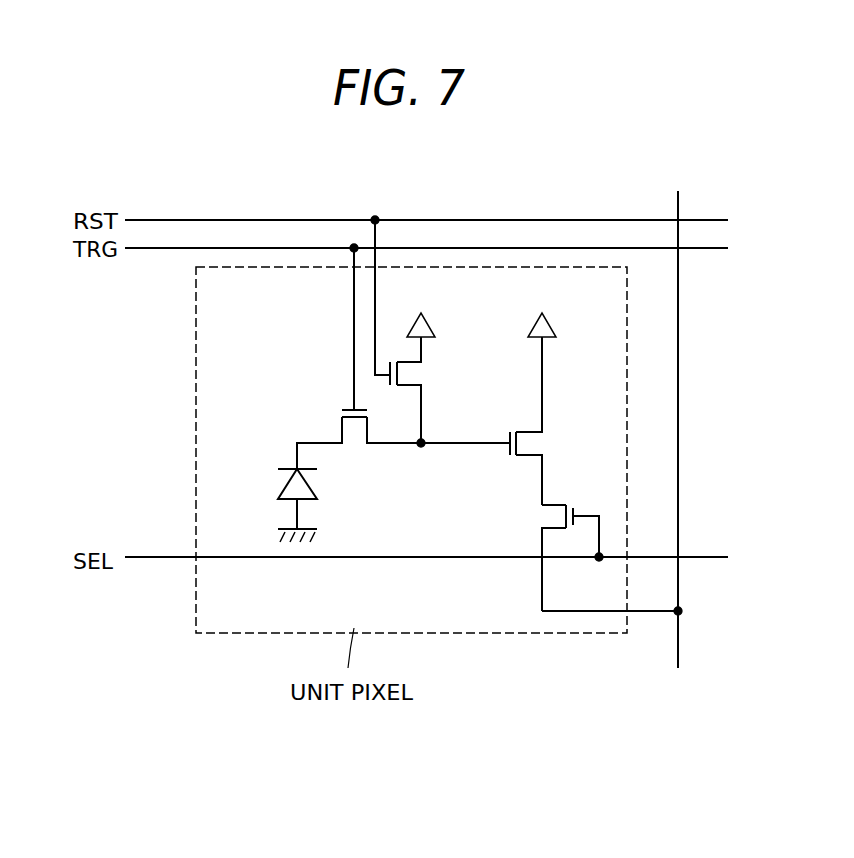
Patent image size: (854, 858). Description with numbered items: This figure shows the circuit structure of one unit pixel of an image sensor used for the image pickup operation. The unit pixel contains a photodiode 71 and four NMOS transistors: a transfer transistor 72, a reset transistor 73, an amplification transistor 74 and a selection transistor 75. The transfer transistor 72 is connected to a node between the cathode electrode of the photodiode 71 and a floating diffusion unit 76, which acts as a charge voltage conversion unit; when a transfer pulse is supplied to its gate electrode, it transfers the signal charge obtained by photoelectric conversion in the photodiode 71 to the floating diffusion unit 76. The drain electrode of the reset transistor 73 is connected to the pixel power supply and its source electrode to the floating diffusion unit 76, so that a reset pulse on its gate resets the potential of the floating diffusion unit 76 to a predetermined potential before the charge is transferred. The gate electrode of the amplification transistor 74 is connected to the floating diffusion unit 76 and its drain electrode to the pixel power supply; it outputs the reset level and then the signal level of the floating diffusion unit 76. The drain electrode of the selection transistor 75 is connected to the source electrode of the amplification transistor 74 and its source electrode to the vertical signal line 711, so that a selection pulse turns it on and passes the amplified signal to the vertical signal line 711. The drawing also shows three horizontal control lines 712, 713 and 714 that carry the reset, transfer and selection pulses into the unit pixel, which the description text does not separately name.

The photodiode 71 is at (283, 492).
The transfer transistor 72 is at (358, 425).
The reset transistor 73 is at (413, 375).
The amplification transistor 74 is at (530, 443).
The selection transistor 75 is at (550, 520).
The floating diffusion unit 76 is at (421, 447).
The vertical signal line 711 is at (680, 640).
The transfer line TRG 712 is at (172, 246).
The reset line RST 713 is at (460, 218).
The selection line SEL 714 is at (272, 560).